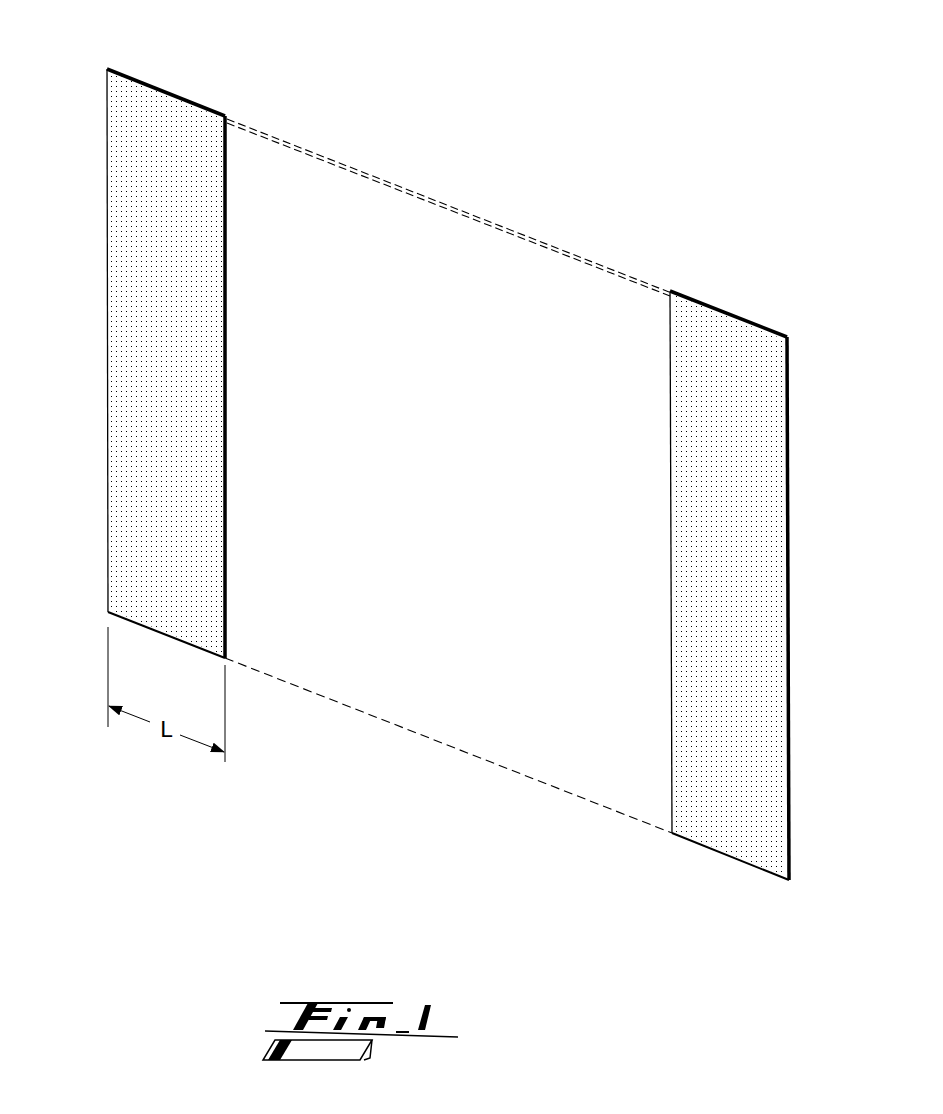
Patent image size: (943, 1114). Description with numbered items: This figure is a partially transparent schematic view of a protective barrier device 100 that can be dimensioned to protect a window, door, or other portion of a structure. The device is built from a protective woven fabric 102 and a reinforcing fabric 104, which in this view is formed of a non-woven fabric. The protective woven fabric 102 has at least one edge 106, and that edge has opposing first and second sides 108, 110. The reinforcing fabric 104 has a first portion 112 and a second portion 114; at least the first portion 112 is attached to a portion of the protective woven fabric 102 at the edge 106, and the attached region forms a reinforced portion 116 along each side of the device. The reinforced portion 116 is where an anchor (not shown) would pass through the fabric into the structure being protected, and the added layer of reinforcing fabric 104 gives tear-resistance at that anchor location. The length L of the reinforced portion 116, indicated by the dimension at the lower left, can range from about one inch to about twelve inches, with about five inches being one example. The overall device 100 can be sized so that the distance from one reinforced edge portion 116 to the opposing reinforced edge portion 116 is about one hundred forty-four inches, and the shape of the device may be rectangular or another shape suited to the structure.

The protective barrier device 100 is at (391, 838).
The protective woven fabric 102 is at (474, 579).
The reinforcing fabric 104 is at (207, 470).
The edge 106 is at (225, 370).
The first side 108 is at (515, 226).
The second side 110 is at (486, 224).
The first portion 112 is at (108, 97).
The second portion 114 is at (166, 101).
The reinforced portion 116 is at (96, 592).